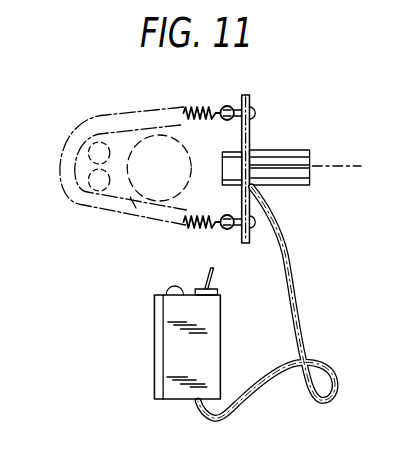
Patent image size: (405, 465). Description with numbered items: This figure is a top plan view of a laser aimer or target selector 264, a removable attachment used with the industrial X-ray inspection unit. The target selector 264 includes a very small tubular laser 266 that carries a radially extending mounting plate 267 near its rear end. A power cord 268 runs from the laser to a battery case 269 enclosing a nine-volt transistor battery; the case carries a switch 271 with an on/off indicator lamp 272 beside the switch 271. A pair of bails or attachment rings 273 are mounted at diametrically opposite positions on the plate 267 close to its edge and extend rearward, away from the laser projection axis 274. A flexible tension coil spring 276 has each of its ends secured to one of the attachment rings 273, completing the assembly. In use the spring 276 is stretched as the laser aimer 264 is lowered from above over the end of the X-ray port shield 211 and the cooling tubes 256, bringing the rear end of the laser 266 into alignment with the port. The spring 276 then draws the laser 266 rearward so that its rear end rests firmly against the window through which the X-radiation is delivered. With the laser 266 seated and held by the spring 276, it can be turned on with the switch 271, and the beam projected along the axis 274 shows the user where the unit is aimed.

The X-ray port shield 211 is at (112, 222).
The cooling tubes 256 is at (84, 170).
The laser target selector 264 is at (158, 238).
The tubular laser 266 is at (305, 151).
The mounting plate 267 is at (252, 130).
The power cord 268 is at (295, 276).
The battery case 269 is at (210, 373).
The switch 271 is at (218, 292).
The on/off indicator lamp 272 is at (163, 291).
The attachment rings 273 is at (224, 104).
The laser projection axis 274 is at (362, 168).
The tension coil spring 276 is at (74, 203).